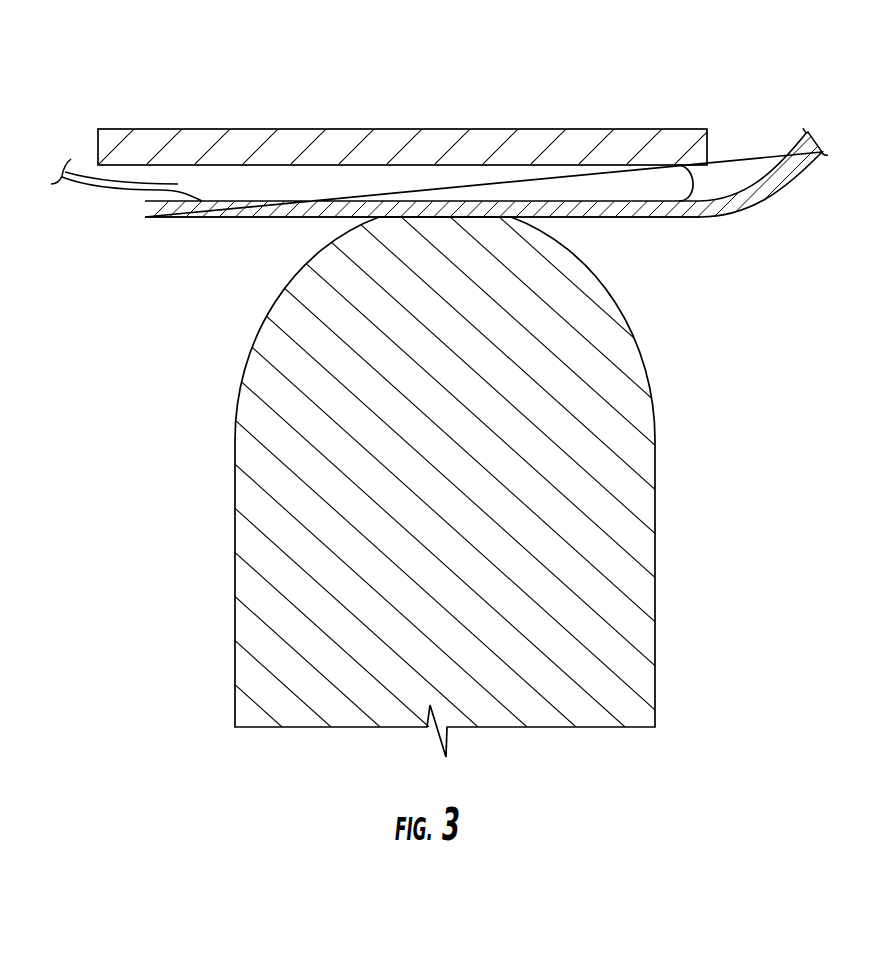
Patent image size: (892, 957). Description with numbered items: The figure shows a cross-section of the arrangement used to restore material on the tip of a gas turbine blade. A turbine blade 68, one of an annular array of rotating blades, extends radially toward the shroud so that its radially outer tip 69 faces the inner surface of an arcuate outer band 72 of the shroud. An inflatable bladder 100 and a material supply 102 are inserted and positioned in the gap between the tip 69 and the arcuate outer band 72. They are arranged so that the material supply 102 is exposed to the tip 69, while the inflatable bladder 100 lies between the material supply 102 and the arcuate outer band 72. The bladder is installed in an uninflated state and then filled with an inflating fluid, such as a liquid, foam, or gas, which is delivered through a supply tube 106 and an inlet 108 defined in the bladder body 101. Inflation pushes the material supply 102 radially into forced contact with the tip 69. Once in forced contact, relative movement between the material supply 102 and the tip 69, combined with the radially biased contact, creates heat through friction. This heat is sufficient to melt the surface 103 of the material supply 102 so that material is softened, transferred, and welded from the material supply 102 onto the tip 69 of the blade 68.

The turbine blade 68 is at (610, 610).
The tip 69 is at (455, 208).
The arcuate outer band 72 is at (248, 145).
The inflatable bladder 100 is at (603, 185).
The bladder body 101 is at (400, 194).
The material supply 102 is at (620, 218).
The surface 103 is at (263, 222).
The supply tube 106 is at (70, 182).
The inlet 108 is at (174, 178).